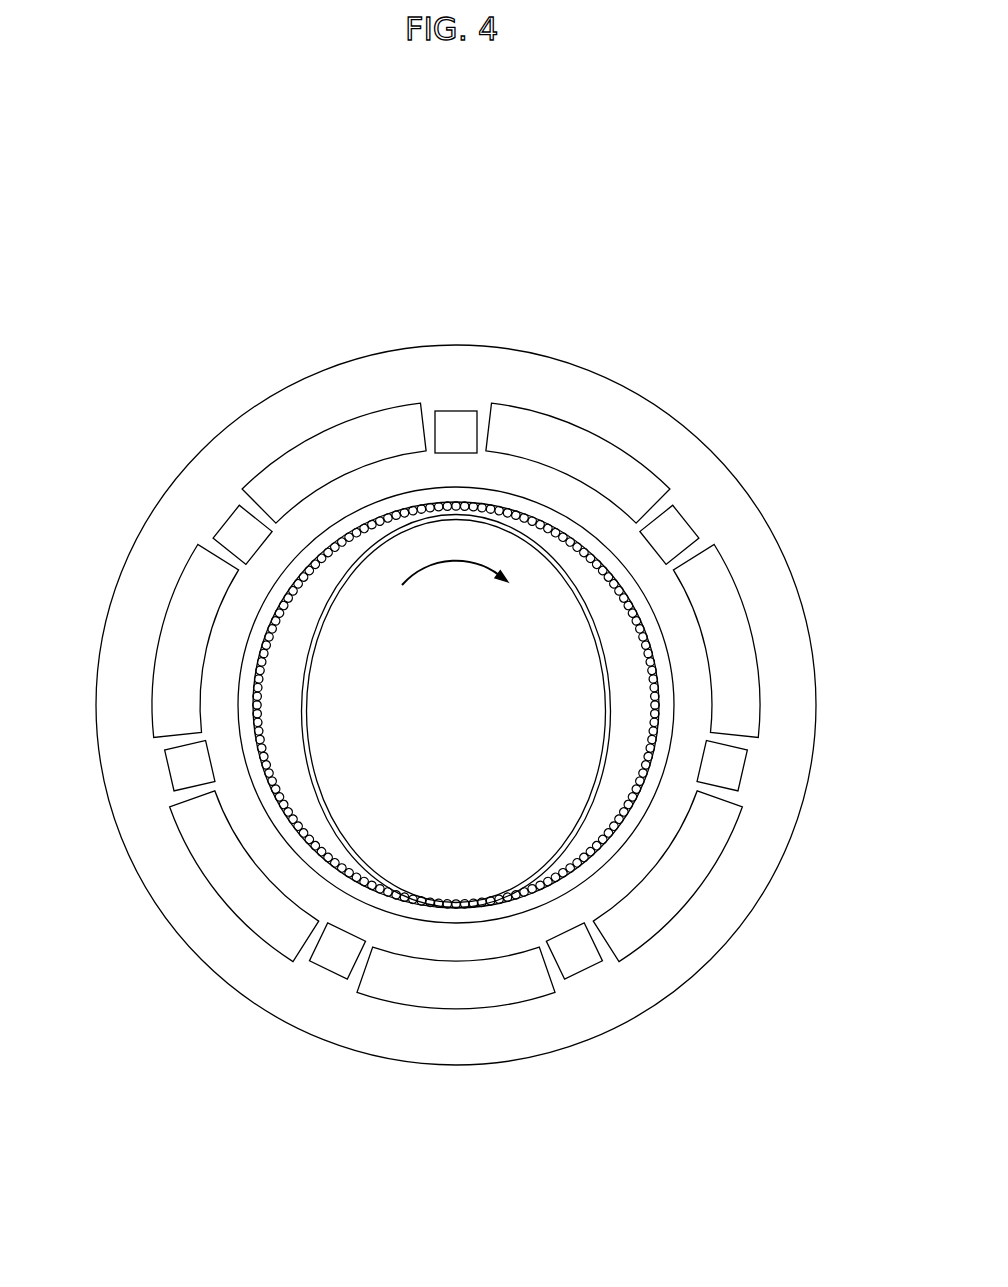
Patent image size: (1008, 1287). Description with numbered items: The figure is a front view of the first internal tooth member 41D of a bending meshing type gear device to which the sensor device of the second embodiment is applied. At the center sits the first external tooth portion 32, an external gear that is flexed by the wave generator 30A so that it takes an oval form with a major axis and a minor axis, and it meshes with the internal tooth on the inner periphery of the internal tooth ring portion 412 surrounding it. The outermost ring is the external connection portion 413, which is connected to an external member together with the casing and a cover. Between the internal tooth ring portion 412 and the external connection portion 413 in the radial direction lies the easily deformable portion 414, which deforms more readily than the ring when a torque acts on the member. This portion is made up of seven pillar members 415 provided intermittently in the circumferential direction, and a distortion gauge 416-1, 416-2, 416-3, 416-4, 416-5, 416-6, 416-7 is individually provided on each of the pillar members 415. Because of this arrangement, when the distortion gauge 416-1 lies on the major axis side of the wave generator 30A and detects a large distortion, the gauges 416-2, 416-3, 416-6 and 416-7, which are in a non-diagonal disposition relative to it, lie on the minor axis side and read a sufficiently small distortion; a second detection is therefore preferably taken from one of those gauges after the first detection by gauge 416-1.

The first internal tooth member 41D is at (745, 304).
The internal tooth ring portion 412 is at (253, 852).
The external connection portion 413 is at (343, 380).
The easily deformable portion 414 is at (464, 724).
The pillar member 415 is at (490, 430).
The distortion gauge 416-1 is at (453, 410).
The distortion gauge 416-2 is at (685, 520).
The distortion gauge 416-3 is at (743, 768).
The distortion gauge 416-4 is at (582, 970).
The distortion gauge 416-5 is at (328, 970).
The distortion gauge 416-6 is at (168, 770).
The distortion gauge 416-7 is at (223, 522).
The first external tooth portion 32 is at (560, 557).
The wave generator 30A is at (476, 664).